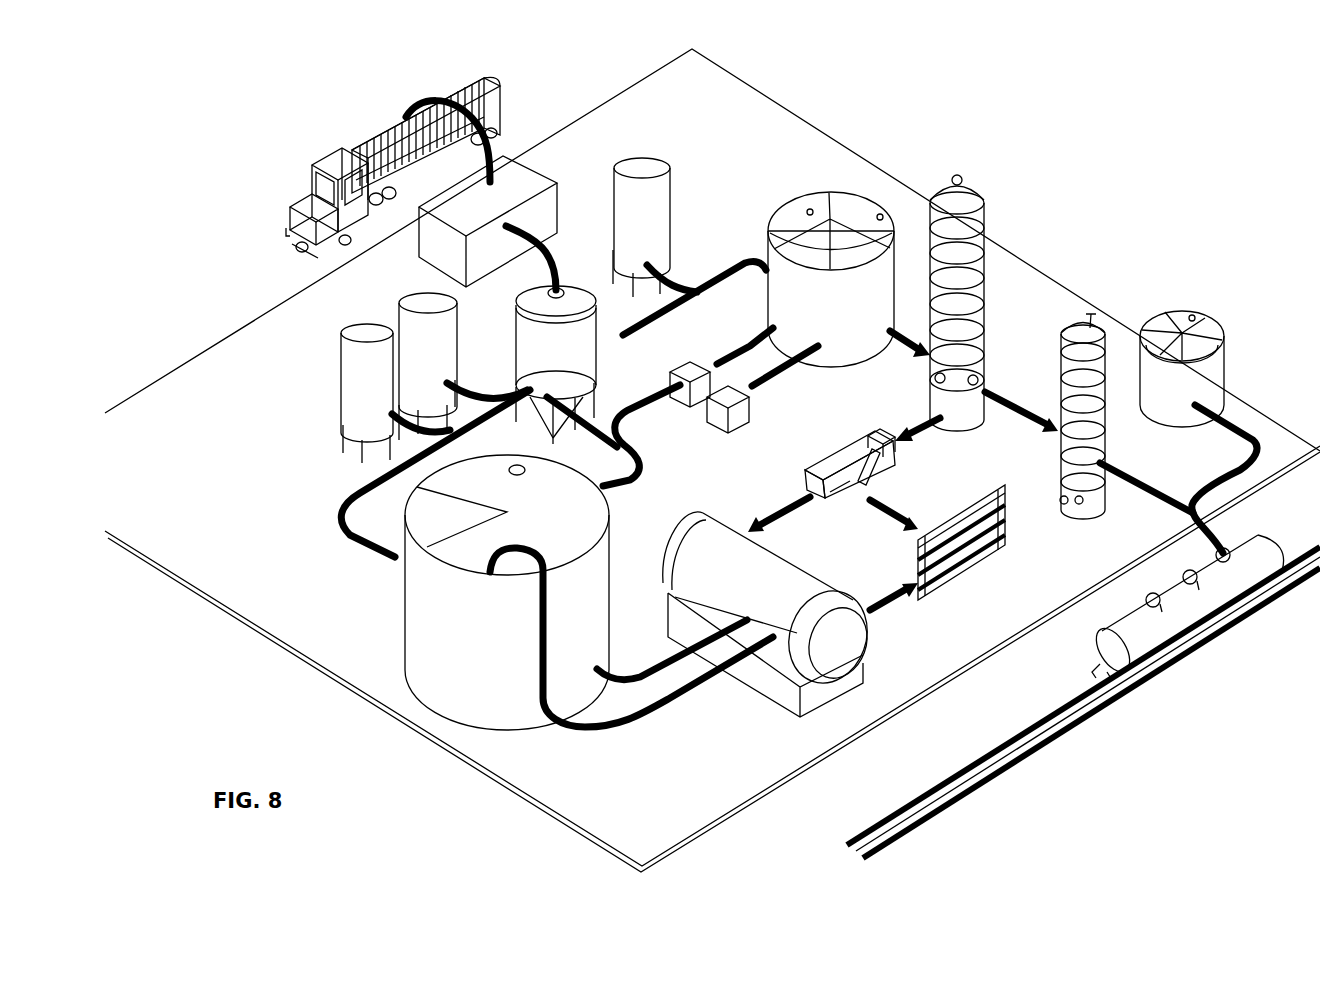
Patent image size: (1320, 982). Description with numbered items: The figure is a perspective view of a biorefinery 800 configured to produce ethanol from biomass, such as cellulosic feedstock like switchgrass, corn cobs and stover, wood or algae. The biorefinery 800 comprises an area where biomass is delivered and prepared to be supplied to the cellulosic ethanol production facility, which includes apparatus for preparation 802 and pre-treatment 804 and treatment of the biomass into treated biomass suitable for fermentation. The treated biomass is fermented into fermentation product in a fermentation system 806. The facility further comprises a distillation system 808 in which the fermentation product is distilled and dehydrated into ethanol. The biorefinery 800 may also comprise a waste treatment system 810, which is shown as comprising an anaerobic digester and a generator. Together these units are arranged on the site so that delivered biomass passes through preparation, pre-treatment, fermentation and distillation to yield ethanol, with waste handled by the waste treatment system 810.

The biorefinery 800 is at (1063, 114).
The apparatus for preparation 802 is at (610, 103).
The pre-treatment apparatus 804 is at (479, 421).
The fermentation system 806 is at (823, 289).
The distillation system 808 is at (1103, 308).
The waste treatment system 810 is at (589, 592).